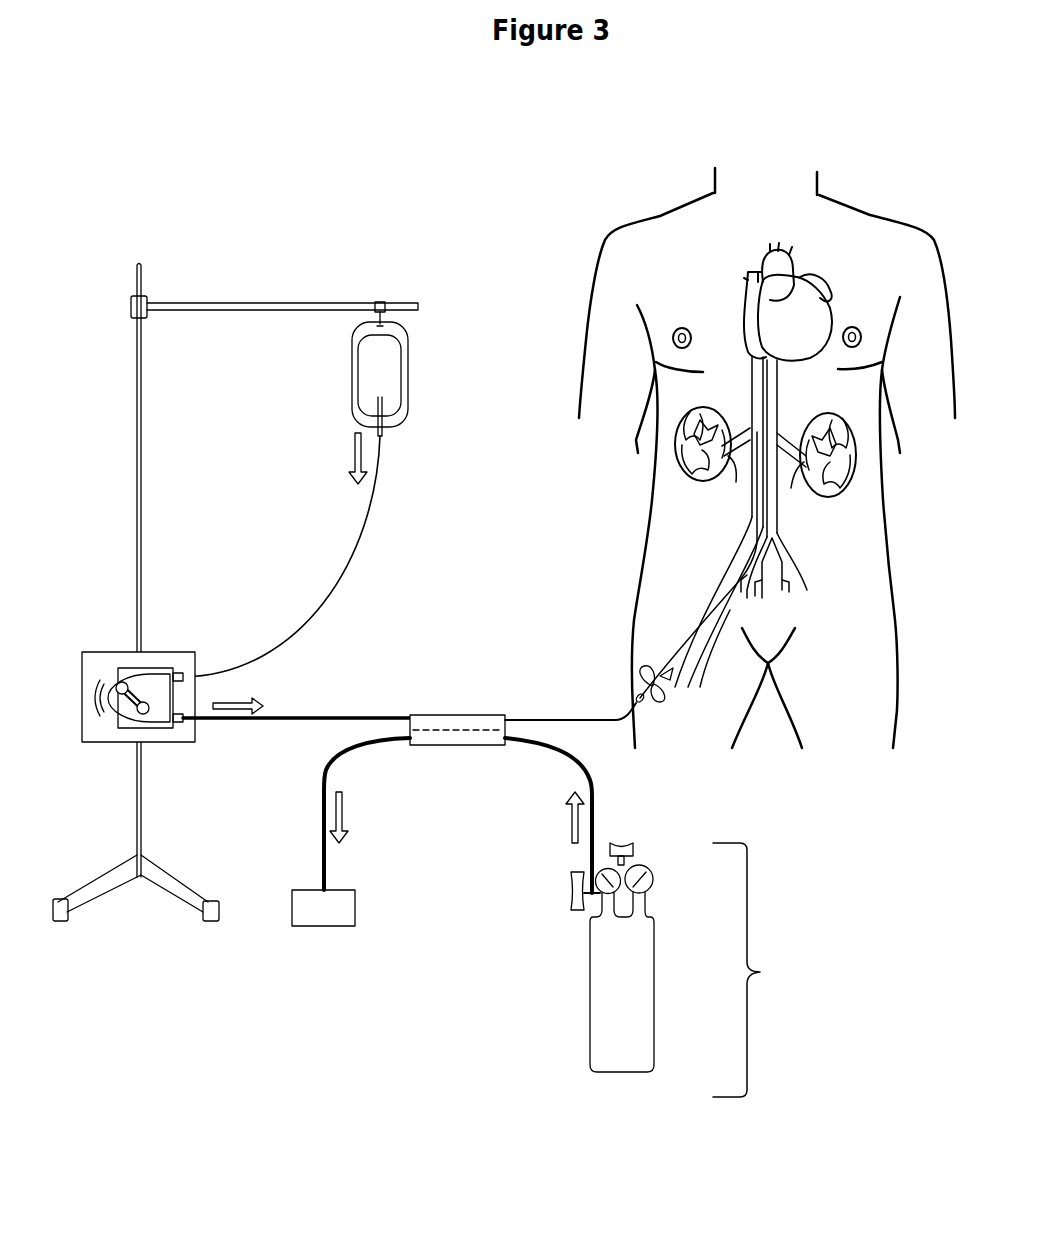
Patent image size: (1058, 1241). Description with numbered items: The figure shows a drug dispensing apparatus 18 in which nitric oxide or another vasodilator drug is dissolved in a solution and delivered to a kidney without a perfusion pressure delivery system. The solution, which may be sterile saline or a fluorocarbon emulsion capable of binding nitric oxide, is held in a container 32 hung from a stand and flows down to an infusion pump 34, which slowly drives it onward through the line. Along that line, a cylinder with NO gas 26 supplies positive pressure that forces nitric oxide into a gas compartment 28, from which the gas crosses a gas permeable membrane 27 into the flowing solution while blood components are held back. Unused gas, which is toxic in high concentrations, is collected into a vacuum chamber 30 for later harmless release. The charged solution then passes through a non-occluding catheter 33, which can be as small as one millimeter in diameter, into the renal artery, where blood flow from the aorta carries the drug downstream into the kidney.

The drug dispensing apparatus 18 is at (682, 970).
The cylinder with NO gas 26 is at (590, 956).
The gas permeable membrane 27 is at (459, 727).
The gas compartment 28 is at (478, 752).
The vacuum chamber 30 is at (325, 908).
The container 32 is at (388, 357).
The catheter 33 is at (830, 470).
The infusion pump 34 is at (128, 683).